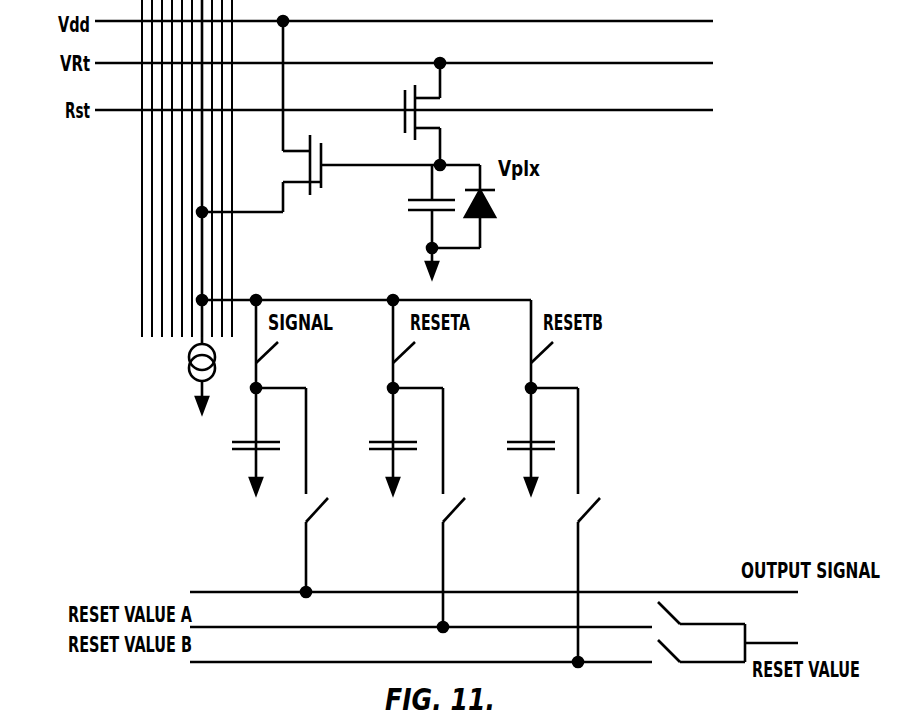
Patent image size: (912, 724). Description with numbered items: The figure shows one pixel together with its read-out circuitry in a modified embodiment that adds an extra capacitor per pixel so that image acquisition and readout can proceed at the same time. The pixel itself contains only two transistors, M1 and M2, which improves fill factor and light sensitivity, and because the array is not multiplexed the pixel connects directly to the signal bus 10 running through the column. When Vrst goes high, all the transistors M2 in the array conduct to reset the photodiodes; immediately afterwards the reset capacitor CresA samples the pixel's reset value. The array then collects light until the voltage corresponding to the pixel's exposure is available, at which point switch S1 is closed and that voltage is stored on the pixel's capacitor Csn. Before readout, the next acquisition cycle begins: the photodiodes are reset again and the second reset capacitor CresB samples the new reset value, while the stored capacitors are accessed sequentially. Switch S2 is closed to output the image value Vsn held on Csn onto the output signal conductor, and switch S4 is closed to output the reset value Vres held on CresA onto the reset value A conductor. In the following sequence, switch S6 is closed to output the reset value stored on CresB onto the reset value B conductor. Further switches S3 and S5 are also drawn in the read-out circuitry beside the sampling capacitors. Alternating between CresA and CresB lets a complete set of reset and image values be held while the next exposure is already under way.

The signal bus 10 is at (114, 268).
The transistor M1 is at (338, 116).
The transistor M2 is at (445, 114).
The switch S1 is at (278, 344).
The switch S2 is at (292, 492).
The switch S3 is at (415, 344).
The switch S4 is at (429, 510).
The switch S5 is at (553, 344).
The switch S6 is at (565, 527).
The pixel capacitor Csn is at (247, 438).
The reset capacitor CresA is at (376, 438).
The reset capacitor CresB is at (514, 438).